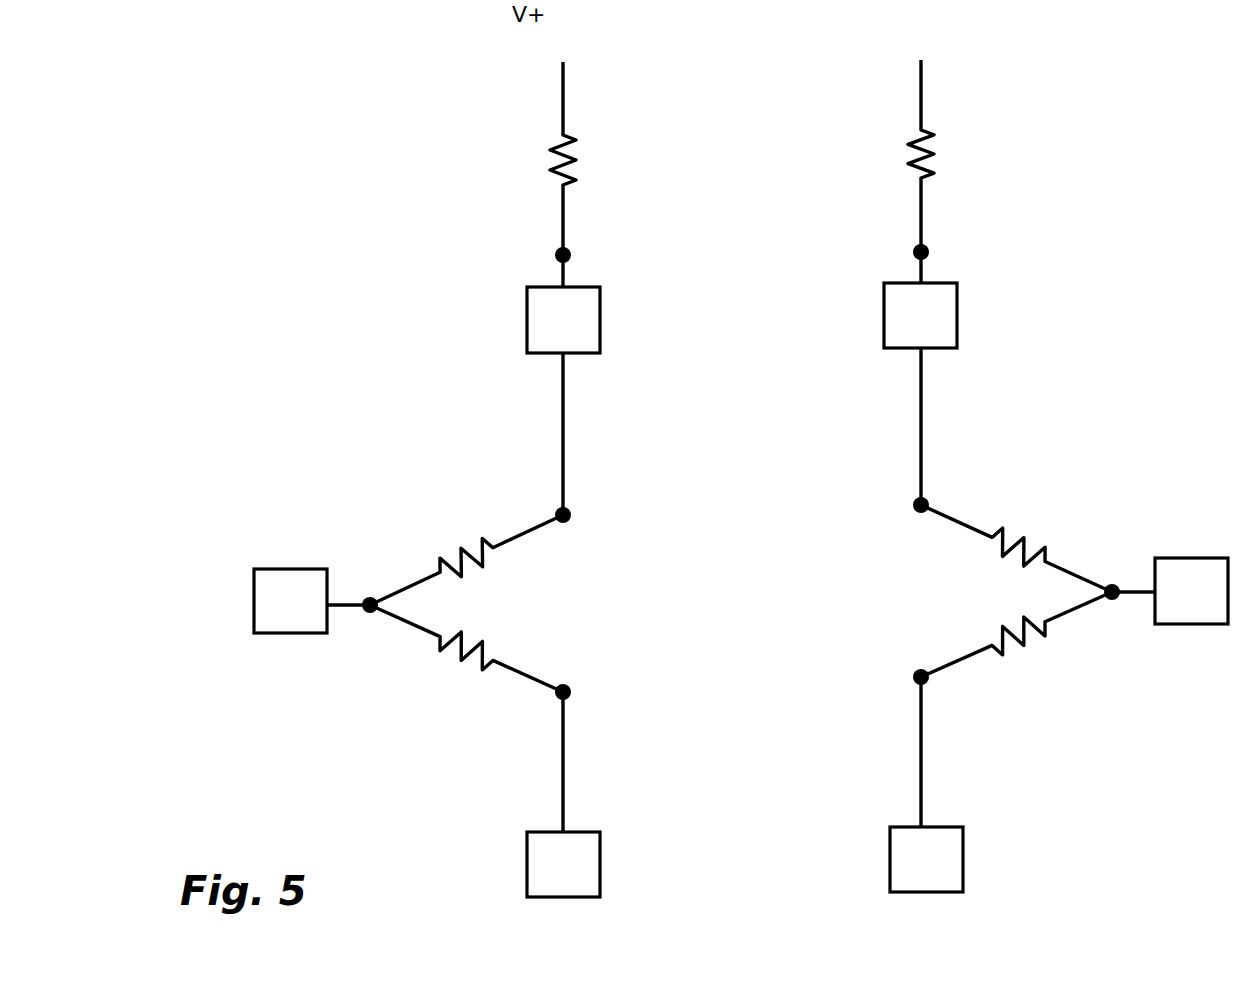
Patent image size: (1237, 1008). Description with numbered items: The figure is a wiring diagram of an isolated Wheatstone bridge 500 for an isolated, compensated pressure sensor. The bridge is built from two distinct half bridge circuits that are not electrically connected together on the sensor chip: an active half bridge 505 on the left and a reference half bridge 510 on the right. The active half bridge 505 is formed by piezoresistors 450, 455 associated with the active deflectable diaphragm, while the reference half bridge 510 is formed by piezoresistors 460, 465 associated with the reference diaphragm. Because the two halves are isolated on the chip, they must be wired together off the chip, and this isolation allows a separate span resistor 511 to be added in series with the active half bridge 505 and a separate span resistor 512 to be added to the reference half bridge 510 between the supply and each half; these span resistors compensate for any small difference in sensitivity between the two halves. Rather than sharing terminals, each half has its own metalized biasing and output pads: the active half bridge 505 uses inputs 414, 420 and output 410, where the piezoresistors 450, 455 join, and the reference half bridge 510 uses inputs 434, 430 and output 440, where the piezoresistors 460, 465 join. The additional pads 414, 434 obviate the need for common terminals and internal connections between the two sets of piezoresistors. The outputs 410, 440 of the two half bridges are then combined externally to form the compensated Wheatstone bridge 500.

The isolated Wheatstone bridge 500 is at (284, 98).
The active half bridge 505 is at (422, 308).
The reference half bridge 510 is at (812, 310).
The span resistor 511 is at (550, 173).
The span resistor 512 is at (905, 167).
The terminal pad 414 is at (563, 320).
The terminal pad 434 is at (920, 315).
The output terminal pad 410 is at (312, 601).
The output terminal pad 440 is at (1170, 591).
The input terminal pad 420 is at (563, 864).
The input terminal pad 430 is at (926, 859).
The piezoresistor 450 is at (466, 560).
The piezoresistor 455 is at (466, 648).
The piezoresistor 460 is at (1016, 548).
The piezoresistor 465 is at (1016, 634).